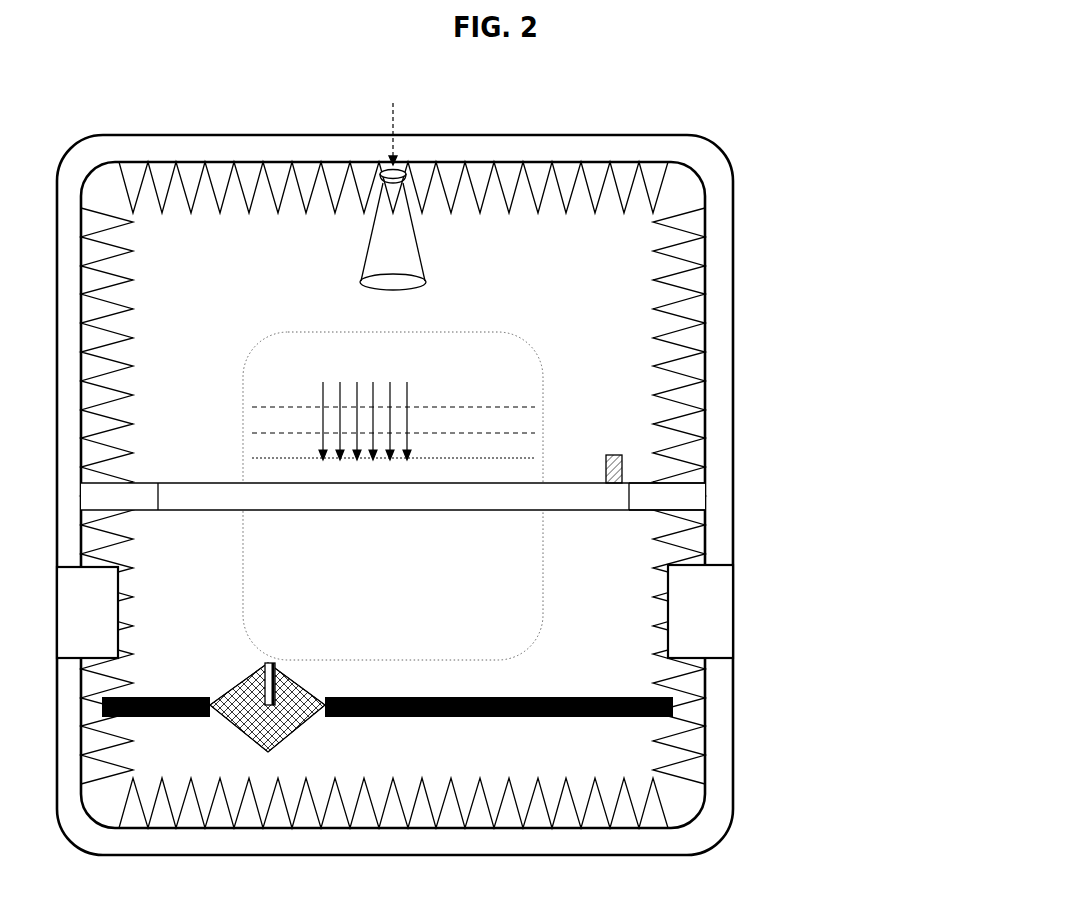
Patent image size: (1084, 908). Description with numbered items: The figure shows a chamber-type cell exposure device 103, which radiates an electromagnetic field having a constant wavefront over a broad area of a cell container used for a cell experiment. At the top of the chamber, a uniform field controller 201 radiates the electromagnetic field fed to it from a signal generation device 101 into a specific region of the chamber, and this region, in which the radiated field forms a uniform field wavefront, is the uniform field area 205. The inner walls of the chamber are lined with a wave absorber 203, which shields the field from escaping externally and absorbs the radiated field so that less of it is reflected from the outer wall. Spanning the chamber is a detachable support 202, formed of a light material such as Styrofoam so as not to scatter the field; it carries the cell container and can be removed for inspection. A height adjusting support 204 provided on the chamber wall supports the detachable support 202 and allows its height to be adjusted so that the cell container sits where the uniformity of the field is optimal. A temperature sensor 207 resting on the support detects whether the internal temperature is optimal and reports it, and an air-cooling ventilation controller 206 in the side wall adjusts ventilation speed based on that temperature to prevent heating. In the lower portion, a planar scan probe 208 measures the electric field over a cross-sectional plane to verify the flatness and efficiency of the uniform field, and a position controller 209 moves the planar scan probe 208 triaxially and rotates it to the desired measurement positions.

The signal generation device 101 is at (392, 120).
The chamber-type cell exposure device 103 is at (395, 514).
The uniform field controller 201 is at (397, 260).
The detachable support 202 is at (183, 502).
The wave absorber 203 is at (695, 252).
The height adjusting support 204 is at (695, 495).
The uniform field area 205 is at (290, 350).
The air-cooling ventilation controller 206 is at (707, 615).
The temperature sensor 207 is at (613, 453).
The planar scan probe 208 is at (293, 730).
The position controller 209 is at (658, 717).